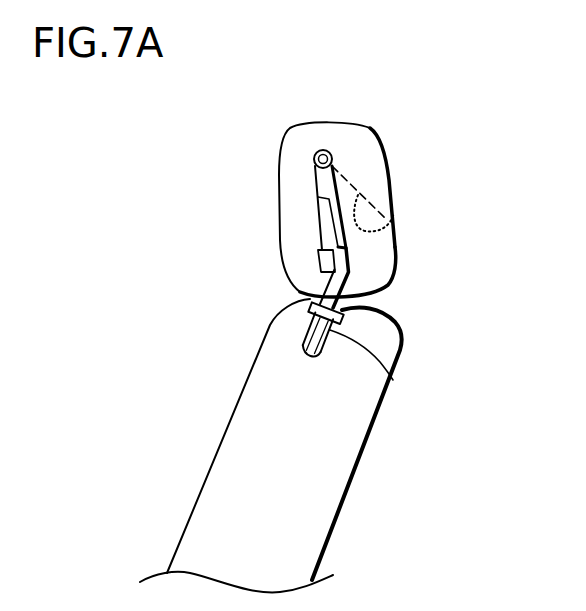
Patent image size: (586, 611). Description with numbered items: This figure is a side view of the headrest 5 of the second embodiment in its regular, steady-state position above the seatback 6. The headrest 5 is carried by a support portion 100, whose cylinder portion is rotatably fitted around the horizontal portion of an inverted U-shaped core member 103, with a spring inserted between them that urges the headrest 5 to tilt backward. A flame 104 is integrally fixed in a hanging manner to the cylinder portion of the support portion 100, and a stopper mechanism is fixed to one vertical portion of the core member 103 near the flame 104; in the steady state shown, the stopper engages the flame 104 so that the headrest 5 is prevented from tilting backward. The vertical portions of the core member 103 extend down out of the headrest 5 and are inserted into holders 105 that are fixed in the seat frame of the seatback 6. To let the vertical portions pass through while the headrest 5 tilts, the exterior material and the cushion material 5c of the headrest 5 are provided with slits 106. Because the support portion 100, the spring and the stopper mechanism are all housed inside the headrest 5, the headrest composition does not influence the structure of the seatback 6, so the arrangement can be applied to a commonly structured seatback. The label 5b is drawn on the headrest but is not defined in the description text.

The support portion 100 is at (334, 227).
The headrest 5 is at (340, 140).
The headrest rear portion 5b is at (392, 190).
The cushion material 5c is at (375, 185).
The slits 106 is at (394, 222).
The core member 103 is at (338, 256).
The flame 104 is at (320, 208).
The holders 105 is at (393, 380).
The seatback 6 is at (347, 452).